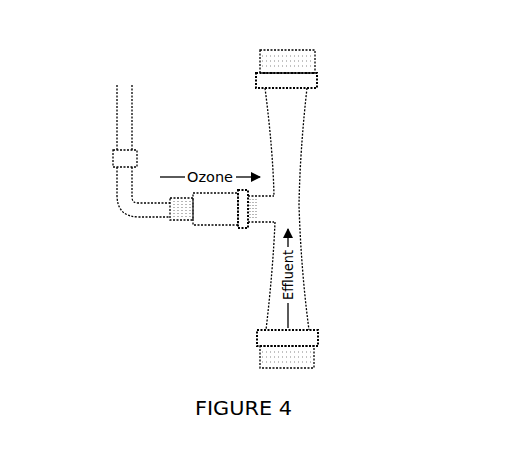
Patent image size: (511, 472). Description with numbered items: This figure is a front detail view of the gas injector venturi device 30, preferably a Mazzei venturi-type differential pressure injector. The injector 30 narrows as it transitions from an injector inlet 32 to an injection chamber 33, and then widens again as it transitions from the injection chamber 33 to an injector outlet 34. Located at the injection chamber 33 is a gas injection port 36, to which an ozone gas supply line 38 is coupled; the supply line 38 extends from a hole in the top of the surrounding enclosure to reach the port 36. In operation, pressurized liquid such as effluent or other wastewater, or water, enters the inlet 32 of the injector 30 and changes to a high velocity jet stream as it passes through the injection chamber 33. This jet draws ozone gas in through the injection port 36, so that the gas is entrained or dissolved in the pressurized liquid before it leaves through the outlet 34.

The gas injector venturi device 30 is at (372, 159).
The injector inlet 32 is at (292, 368).
The injection chamber 33 is at (290, 209).
The injector outlet 34 is at (289, 52).
The gas injection port 36 is at (218, 210).
The ozone gas supply line 38 is at (137, 212).